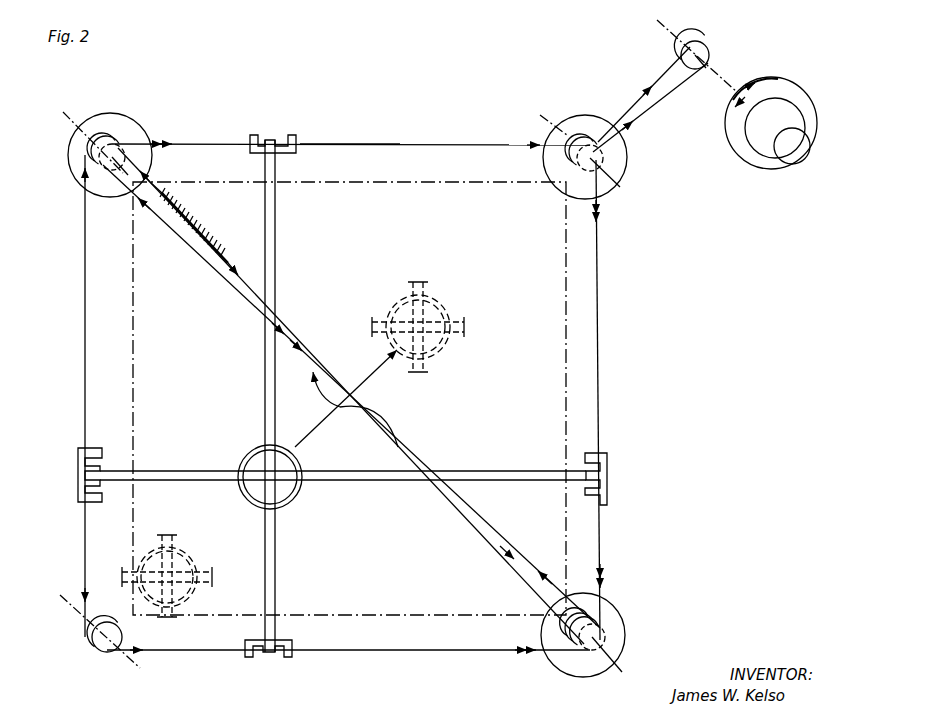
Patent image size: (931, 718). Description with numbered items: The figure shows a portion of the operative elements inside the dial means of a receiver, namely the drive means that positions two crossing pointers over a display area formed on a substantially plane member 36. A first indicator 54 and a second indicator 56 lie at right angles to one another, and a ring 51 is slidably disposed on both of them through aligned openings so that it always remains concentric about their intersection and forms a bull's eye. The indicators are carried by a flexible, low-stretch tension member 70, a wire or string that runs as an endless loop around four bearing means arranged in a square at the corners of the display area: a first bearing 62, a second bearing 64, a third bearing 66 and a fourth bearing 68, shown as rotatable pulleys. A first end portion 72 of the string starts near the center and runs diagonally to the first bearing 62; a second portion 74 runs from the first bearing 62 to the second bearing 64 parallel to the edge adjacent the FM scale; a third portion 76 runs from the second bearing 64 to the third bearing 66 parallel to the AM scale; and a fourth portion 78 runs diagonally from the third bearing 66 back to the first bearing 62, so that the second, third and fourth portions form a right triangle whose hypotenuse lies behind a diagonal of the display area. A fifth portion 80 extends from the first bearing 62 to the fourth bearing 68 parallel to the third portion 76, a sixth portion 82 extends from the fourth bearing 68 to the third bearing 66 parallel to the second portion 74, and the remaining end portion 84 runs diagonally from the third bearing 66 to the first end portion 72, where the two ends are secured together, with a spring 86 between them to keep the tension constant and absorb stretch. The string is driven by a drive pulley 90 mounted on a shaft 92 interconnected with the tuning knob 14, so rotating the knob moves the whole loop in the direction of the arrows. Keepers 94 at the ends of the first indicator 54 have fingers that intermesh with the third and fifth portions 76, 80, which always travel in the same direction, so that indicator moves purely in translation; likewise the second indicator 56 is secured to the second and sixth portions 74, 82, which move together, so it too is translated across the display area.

The tuning knob 14 is at (786, 150).
The plane member 36 is at (566, 315).
The ring 51 is at (247, 450).
The first indicator 54 is at (277, 279).
The second indicator 56 is at (172, 470).
The first bearing means 62 is at (144, 133).
The second bearing means 64 is at (92, 652).
The third bearing means 66 is at (607, 641).
The fourth bearing means 68 is at (605, 160).
The tension member 70 is at (467, 144).
The first end portion 72 is at (157, 190).
The second portion 74 is at (85, 290).
The third portion 76 is at (460, 651).
The fourth portion 78 is at (257, 314).
The fifth portion 80 is at (347, 145).
The sixth portion 82 is at (599, 418).
The remaining end portion 84 is at (285, 326).
The spring 86 is at (212, 246).
The drive pulley 90 is at (712, 55).
The shaft 92 is at (716, 76).
The keepers 94 is at (272, 140).